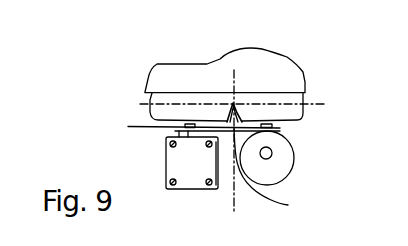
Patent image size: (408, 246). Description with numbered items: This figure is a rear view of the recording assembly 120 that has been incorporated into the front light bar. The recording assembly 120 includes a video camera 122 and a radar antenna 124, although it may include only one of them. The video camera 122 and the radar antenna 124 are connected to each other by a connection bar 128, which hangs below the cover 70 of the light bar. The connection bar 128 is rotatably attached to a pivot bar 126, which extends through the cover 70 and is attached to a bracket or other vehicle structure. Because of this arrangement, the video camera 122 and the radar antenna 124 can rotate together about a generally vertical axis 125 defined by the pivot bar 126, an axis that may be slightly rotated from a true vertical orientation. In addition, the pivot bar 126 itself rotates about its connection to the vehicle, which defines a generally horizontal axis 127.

The cover 70 is at (292, 84).
The recording assembly 120 is at (224, 193).
The video camera 122 is at (183, 159).
The radar antenna 124 is at (280, 157).
The generally vertical axis 125 is at (233, 83).
The pivot bar 126 is at (227, 120).
The generally horizontal axis 127 is at (314, 103).
The connection bar 128 is at (128, 126).